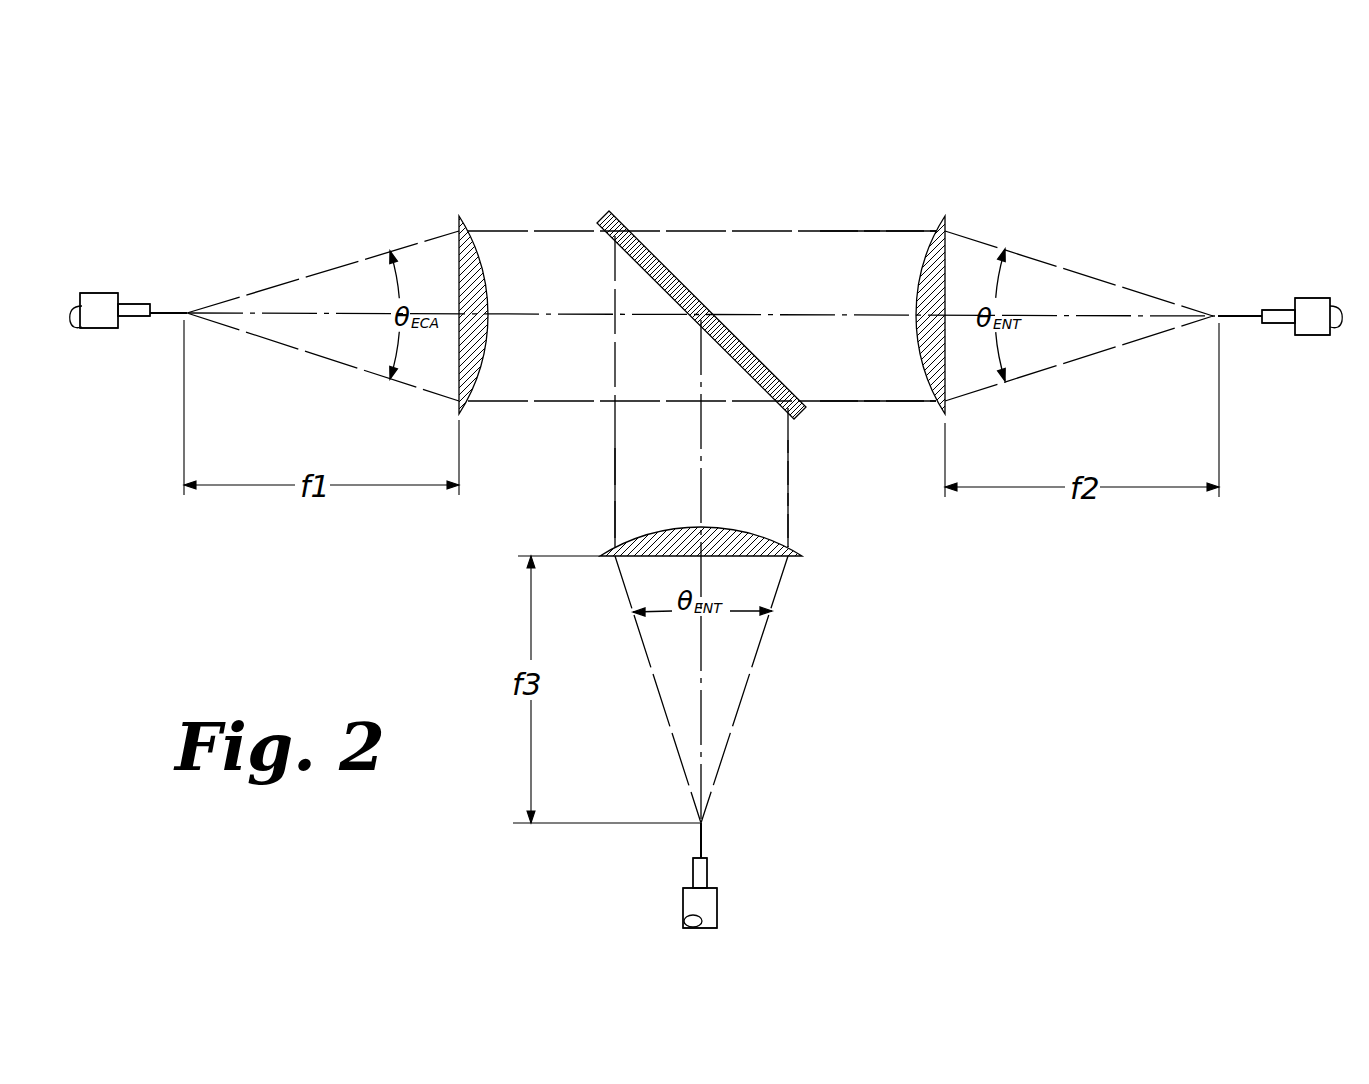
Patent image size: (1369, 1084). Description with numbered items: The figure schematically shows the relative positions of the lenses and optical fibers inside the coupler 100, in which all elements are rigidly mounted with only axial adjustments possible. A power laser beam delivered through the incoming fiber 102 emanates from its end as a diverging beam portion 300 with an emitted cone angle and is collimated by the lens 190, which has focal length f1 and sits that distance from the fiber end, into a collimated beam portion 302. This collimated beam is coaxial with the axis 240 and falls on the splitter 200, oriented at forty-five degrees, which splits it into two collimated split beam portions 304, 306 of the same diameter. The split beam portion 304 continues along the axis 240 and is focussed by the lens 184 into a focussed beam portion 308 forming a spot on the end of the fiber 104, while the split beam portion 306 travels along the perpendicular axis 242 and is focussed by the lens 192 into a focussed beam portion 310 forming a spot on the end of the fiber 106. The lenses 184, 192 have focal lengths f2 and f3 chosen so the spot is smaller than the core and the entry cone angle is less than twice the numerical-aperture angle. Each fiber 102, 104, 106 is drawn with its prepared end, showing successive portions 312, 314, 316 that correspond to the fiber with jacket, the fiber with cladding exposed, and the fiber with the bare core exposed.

The coupler 100 is at (412, 566).
The incoming fiber 102 is at (147, 288).
The fiber 104 is at (1282, 284).
The fiber 106 is at (736, 884).
The lens 184 is at (945, 218).
The lens 190 is at (480, 248).
The lens 192 is at (805, 545).
The splitter 200 is at (622, 210).
The axis 240 is at (828, 317).
The axis 242 is at (702, 473).
The diverging beam portion 300 is at (326, 271).
The collimated beam portion 302 is at (560, 403).
The collimated split beam portion 304 is at (878, 232).
The collimated split beam portion 306 is at (615, 468).
The focussed beam portion 308 is at (1095, 278).
The focussed beam portion 310 is at (742, 697).
The fiber with jacket 312 is at (105, 298).
The fiber without jacket with cladding exposed 314 is at (131, 323).
The fiber with bare core exposed 316 is at (167, 319).